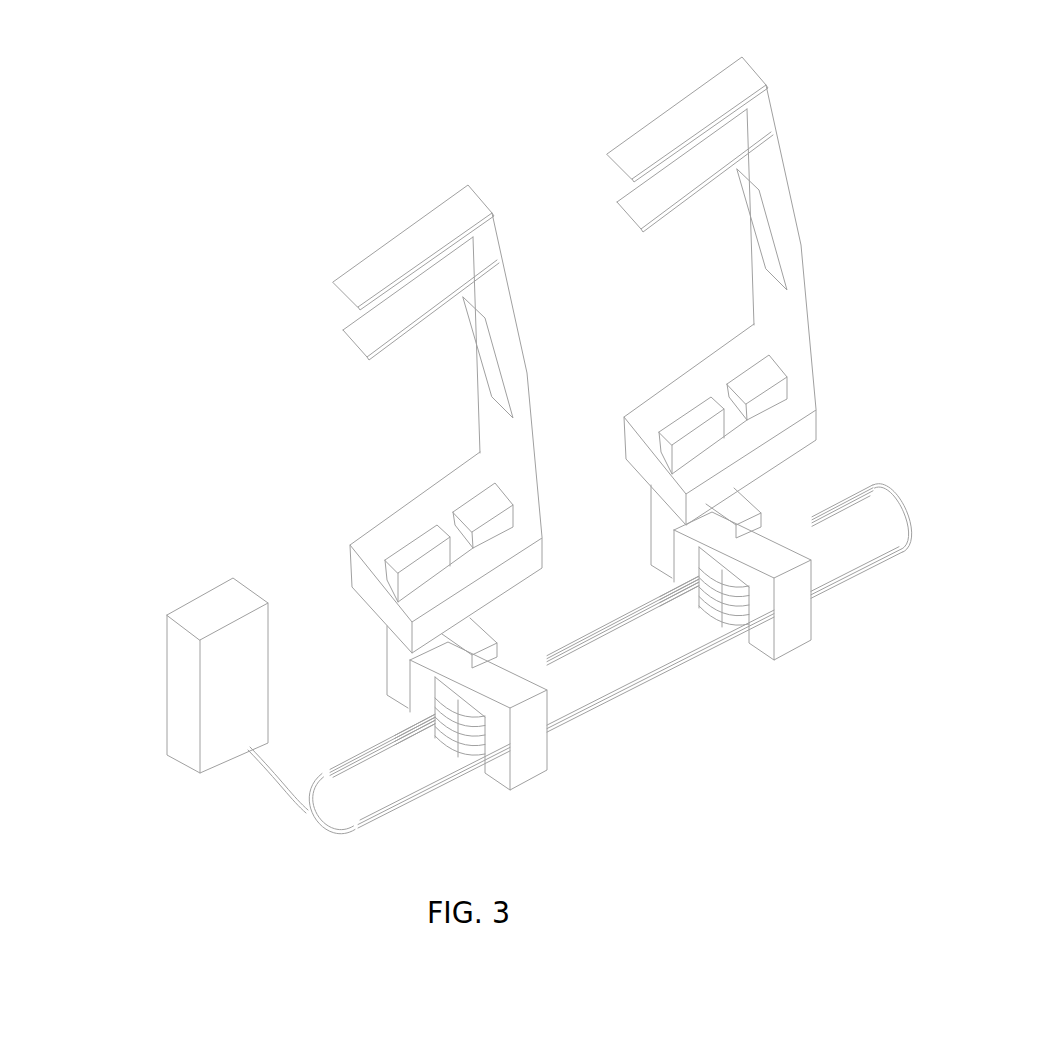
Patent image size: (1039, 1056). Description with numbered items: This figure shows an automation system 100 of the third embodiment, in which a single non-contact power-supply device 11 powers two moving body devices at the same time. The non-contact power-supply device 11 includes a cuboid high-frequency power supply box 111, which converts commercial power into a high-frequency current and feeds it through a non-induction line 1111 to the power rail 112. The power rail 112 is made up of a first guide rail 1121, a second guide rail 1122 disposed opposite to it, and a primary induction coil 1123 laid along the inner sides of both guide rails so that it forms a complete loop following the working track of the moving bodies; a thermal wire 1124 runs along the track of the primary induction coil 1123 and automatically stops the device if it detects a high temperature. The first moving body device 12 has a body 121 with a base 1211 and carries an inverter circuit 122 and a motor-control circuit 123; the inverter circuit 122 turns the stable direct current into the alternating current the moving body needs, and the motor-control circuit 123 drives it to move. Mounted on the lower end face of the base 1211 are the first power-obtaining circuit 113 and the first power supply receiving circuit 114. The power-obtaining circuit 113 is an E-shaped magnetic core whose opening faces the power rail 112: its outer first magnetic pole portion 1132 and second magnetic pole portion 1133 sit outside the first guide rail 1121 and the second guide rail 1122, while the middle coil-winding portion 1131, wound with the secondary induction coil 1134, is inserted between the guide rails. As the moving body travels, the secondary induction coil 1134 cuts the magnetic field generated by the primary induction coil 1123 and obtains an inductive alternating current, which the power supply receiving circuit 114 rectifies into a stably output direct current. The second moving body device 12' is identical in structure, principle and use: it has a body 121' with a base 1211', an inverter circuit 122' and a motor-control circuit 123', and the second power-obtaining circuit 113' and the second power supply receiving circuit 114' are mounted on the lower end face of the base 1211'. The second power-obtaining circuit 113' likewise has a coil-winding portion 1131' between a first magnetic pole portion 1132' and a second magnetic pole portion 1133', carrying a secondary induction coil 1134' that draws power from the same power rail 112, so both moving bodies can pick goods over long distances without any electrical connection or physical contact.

The automation system 100 is at (52, 79).
The non-contact power-supply device 11 is at (262, 560).
The high-frequency power supply box 111 is at (190, 602).
The non-induction line 1111 is at (290, 797).
The power rail 112 is at (330, 720).
The first guide rail 1121 is at (348, 758).
The second guide rail 1122 is at (382, 821).
The primary induction coil 1123 is at (350, 833).
The thermal wire 1124 is at (315, 800).
The power-obtaining circuit 113 is at (428, 700).
The coil-winding portion 1131 is at (441, 737).
The first magnetic pole portion 1132 is at (478, 726).
The second magnetic pole portion 1133 is at (365, 667).
The secondary induction coil 1134 is at (392, 726).
The power supply receiving circuit 114 is at (491, 643).
The first moving body device 12 is at (466, 400).
The body 121 is at (528, 375).
The base 1211 is at (474, 552).
The inverter circuit 122 is at (434, 563).
The motor-control circuit 123 is at (490, 503).
The second power-obtaining circuit 113' is at (684, 558).
The second roller 1131' is at (702, 603).
The second carrier body 1132' is at (742, 596).
The second support post 1133' is at (633, 531).
The secondary induction coil 1134' is at (658, 589).
The second power supply receiving circuit 114' is at (768, 512).
The second moving body device 12' is at (744, 271).
The body 121' is at (802, 247).
The base 1211' is at (753, 424).
The inverter circuit 122' is at (712, 435).
The motor-control circuit 123' is at (766, 375).